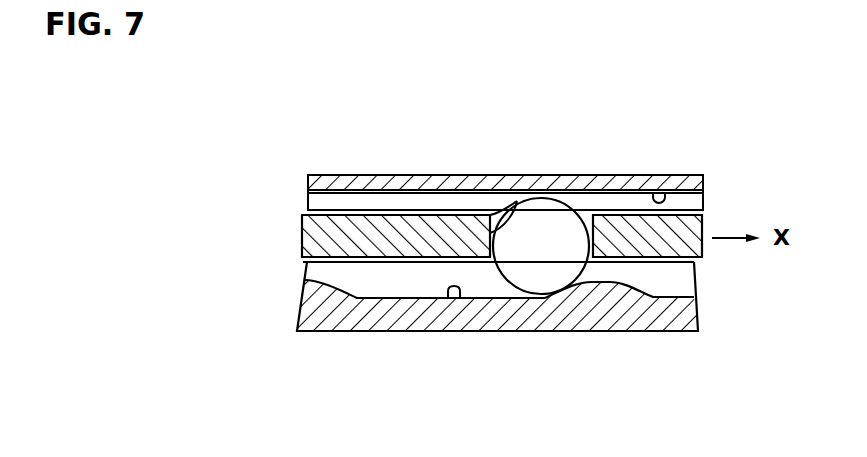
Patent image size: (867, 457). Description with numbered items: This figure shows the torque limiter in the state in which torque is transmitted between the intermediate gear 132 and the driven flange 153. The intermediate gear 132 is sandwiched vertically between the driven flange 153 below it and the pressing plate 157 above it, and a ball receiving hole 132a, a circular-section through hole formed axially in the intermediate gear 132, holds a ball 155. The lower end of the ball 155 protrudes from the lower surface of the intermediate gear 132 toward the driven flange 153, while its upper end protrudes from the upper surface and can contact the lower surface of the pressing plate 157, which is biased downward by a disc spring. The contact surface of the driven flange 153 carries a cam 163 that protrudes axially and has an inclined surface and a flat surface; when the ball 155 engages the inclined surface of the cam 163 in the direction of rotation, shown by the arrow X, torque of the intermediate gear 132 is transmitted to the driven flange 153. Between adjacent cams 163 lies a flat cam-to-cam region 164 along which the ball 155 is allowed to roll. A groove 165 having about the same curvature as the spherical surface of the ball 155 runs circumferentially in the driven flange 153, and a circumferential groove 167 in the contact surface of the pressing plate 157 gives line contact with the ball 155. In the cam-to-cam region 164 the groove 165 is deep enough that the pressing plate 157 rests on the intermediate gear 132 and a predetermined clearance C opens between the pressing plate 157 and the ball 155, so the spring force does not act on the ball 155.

The intermediate gear 132 is at (340, 218).
The ball receiving hole 132a is at (513, 205).
The pressing plate 157 is at (452, 178).
The circumferential groove 167 is at (660, 194).
The ball 155 is at (543, 283).
The clearance C is at (547, 198).
The driven flange 153 is at (375, 331).
The cam 163 is at (602, 278).
The groove 165 is at (403, 287).
The cam-to-cam region 164 is at (457, 298).